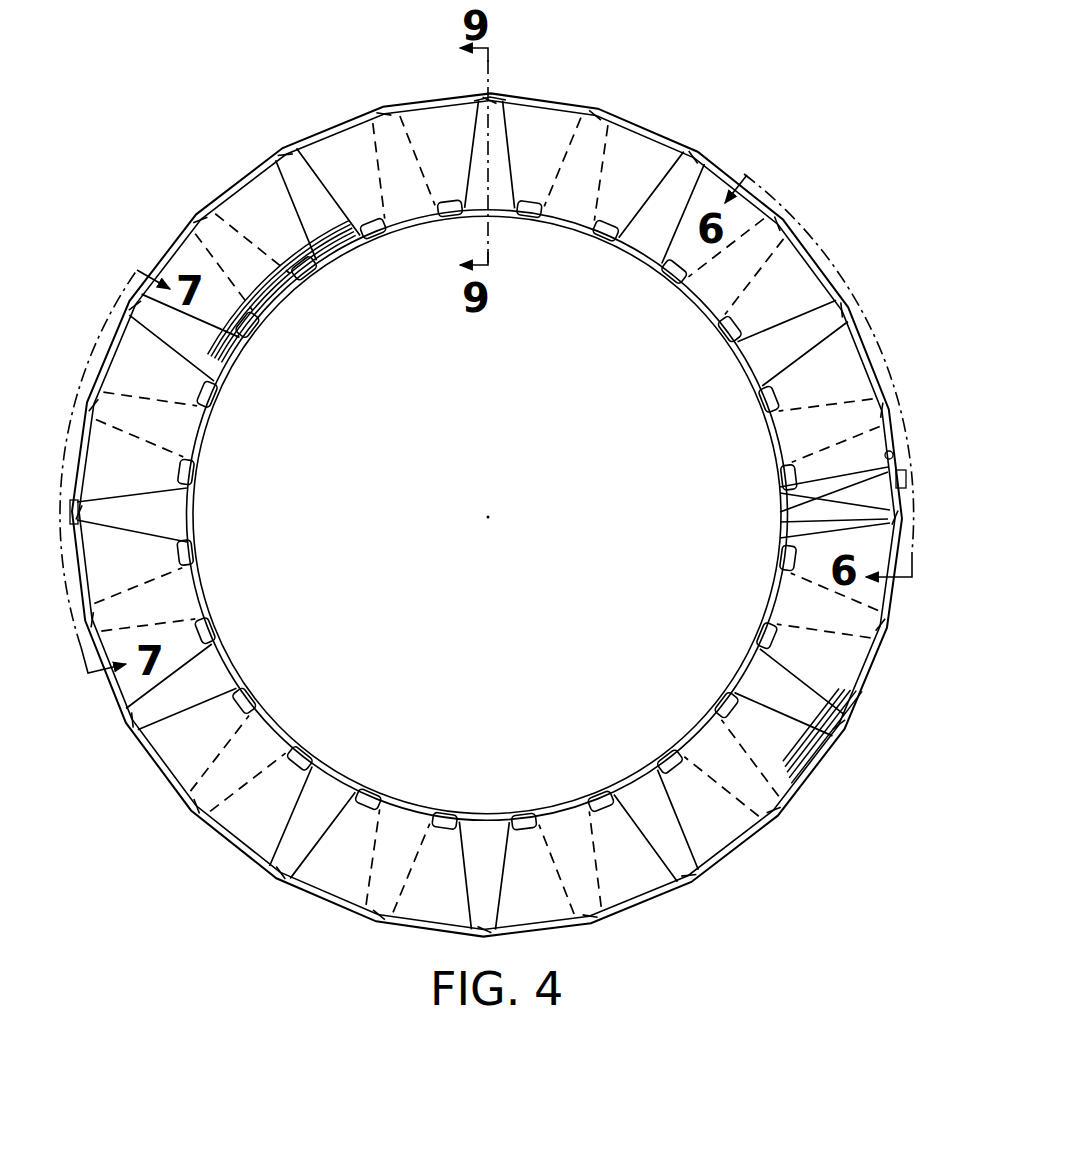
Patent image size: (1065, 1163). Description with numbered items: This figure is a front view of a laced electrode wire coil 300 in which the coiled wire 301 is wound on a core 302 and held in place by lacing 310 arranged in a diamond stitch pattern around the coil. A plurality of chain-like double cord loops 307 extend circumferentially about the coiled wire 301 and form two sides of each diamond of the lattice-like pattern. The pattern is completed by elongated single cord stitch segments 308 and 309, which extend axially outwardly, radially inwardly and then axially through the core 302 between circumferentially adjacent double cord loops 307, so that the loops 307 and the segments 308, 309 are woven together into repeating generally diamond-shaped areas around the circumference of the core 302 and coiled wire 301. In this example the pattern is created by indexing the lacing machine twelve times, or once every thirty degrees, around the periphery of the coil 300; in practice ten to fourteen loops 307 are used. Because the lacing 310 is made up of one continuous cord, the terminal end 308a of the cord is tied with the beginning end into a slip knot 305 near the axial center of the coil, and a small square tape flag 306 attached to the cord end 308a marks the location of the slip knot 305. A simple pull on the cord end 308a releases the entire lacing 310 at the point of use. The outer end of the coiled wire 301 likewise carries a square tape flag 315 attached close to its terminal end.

The electrode wire coil 300 is at (690, 90).
The coiled wire 301 is at (543, 133).
The core 302 is at (738, 372).
The slip knot 305 is at (900, 470).
The tape flag 306 is at (781, 522).
The double cord loops 307 is at (740, 160).
The single cord stitch segment 308 is at (672, 265).
The terminal end of the lacing cord 308a is at (781, 487).
The single cord stitch segment 309 is at (634, 238).
The lacing 310 is at (434, 90).
The tape flag 315 is at (78, 513).